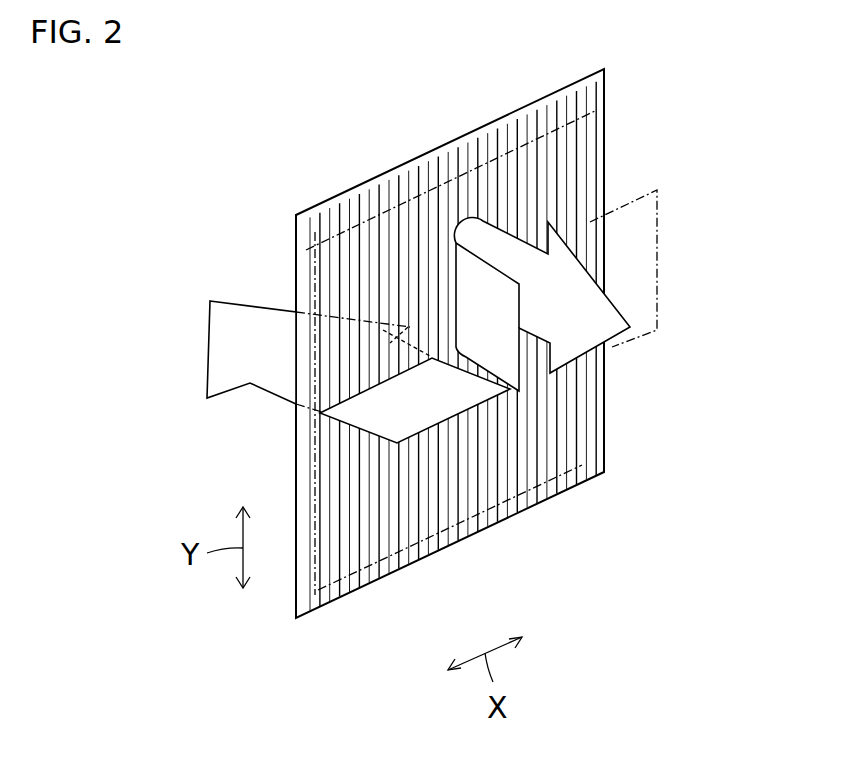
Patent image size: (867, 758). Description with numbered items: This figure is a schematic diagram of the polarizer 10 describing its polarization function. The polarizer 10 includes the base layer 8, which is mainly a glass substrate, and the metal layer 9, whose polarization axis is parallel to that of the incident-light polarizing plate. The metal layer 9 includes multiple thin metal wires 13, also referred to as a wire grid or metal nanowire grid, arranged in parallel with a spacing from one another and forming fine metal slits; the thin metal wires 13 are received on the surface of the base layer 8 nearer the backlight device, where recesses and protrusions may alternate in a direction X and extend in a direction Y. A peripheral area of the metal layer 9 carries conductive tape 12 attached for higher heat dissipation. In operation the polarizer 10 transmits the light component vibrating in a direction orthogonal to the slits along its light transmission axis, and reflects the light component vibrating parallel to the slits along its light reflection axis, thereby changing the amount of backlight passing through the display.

The base layer 8 is at (595, 96).
The metal layer 9 is at (563, 171).
The polarizer 10 is at (531, 343).
The conductive tape 12 is at (635, 273).
The thin metal wires 13 is at (538, 447).